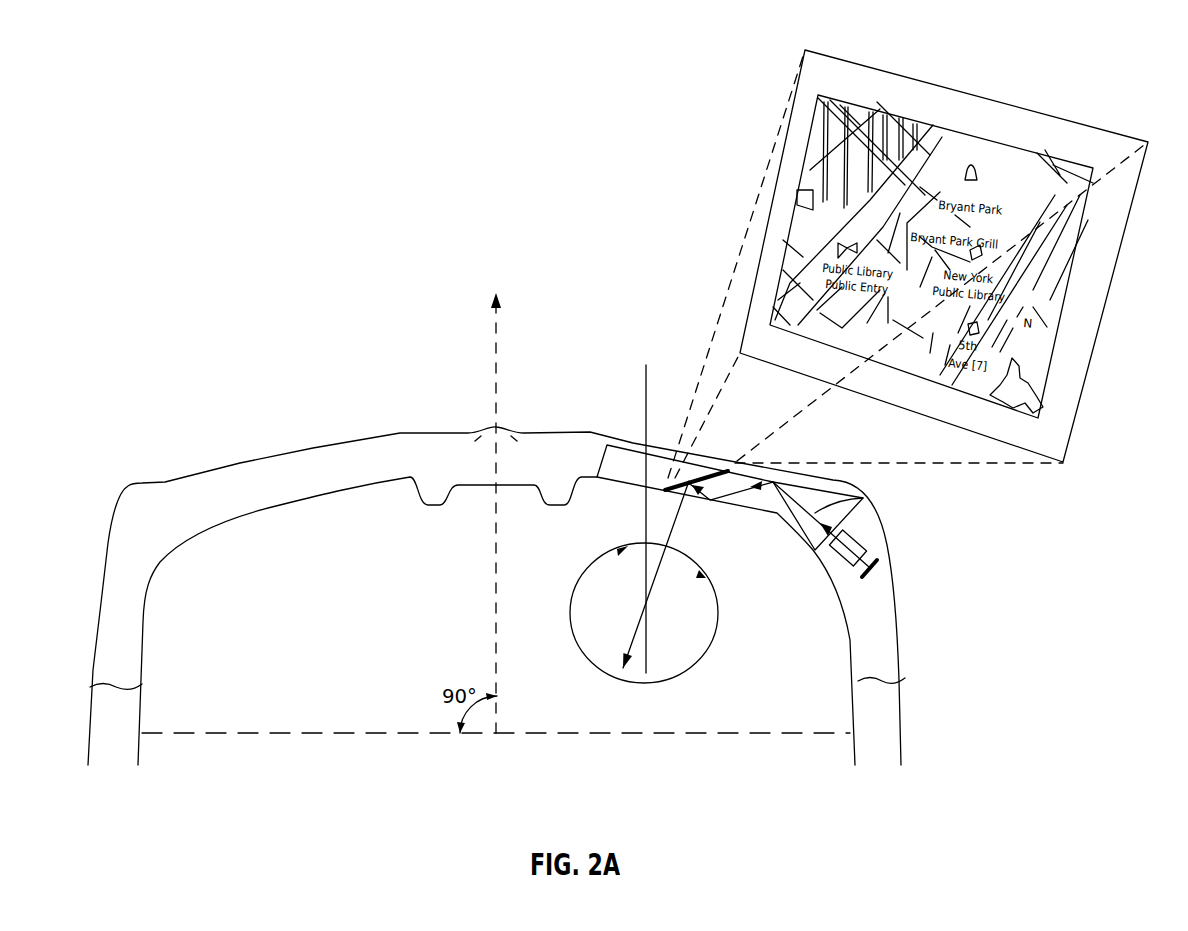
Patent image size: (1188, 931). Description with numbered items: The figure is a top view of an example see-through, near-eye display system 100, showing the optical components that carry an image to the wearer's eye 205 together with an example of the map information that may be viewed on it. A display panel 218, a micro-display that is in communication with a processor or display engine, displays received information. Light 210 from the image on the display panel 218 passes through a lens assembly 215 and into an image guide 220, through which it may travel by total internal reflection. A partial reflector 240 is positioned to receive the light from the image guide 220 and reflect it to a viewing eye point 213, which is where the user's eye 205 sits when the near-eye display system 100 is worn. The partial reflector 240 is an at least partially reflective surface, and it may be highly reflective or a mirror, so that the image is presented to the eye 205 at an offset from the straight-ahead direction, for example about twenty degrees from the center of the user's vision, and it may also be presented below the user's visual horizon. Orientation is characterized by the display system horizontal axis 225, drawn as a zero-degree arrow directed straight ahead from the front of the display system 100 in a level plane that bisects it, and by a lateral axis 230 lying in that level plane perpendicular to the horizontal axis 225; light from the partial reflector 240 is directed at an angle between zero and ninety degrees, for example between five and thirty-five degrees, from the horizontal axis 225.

The near-eye display system 100 is at (328, 447).
The eye 205 is at (702, 600).
The light 210 is at (866, 498).
The viewing eye point 213 is at (645, 610).
The lens assembly 215 is at (860, 538).
The display panel 218 is at (871, 578).
The image guide 220 is at (633, 455).
The display system horizontal axis 225 is at (498, 345).
The lateral axis 230 is at (317, 733).
The partial reflector 240 is at (707, 473).